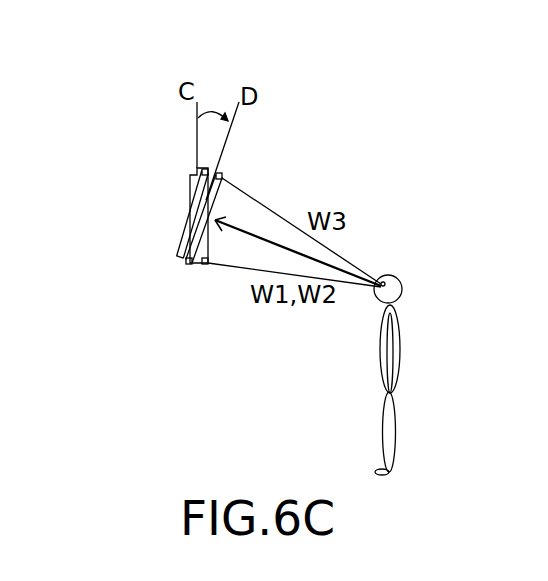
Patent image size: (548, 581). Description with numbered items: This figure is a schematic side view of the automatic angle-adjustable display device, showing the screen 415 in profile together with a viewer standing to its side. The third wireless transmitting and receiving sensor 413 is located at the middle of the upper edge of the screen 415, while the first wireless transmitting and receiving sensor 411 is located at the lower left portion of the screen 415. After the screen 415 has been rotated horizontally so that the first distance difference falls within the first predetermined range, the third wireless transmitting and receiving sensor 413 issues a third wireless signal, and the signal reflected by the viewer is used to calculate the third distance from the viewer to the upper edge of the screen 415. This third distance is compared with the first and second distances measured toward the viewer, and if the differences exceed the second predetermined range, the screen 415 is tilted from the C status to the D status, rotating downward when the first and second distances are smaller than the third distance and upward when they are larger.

The first wireless transmitting and receiving sensor 411 is at (190, 265).
The third wireless transmitting and receiving sensor 413 is at (223, 171).
The screen 415 is at (188, 198).